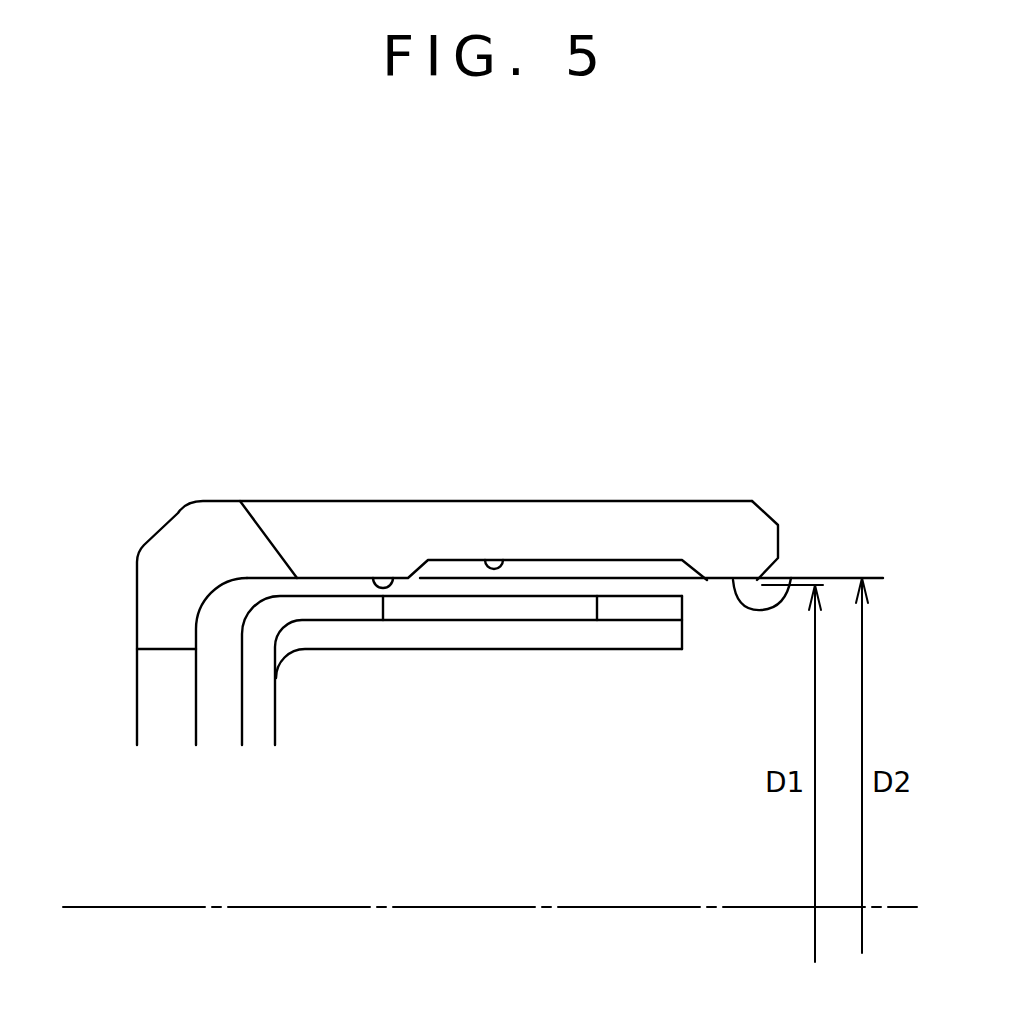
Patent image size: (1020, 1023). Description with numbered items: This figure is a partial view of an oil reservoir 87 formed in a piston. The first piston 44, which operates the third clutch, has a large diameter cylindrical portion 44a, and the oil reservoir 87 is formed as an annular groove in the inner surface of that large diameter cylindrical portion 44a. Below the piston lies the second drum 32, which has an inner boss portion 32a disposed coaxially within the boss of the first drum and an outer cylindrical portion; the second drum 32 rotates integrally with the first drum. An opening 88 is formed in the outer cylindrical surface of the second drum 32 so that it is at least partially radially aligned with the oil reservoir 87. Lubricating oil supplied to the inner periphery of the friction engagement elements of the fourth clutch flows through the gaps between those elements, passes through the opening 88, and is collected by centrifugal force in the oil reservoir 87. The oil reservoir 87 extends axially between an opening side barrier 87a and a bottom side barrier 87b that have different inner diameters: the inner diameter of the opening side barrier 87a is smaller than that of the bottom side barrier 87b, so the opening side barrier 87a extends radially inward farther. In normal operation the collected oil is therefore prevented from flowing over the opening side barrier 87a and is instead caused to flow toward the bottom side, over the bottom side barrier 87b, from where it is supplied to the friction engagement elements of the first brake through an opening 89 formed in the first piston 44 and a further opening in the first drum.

The first piston 44 is at (260, 502).
The large diameter cylindrical portion 44a is at (666, 512).
The oil reservoir 87 is at (503, 560).
The opening side barrier 87a is at (788, 598).
The bottom side barrier 87b is at (396, 578).
The opening 88 is at (597, 617).
The opening 89 is at (160, 583).
The second drum 32 is at (238, 708).
The inner boss portion 32a is at (348, 604).